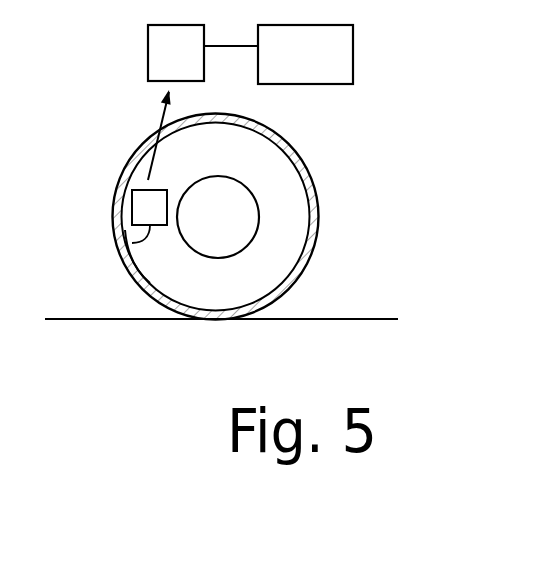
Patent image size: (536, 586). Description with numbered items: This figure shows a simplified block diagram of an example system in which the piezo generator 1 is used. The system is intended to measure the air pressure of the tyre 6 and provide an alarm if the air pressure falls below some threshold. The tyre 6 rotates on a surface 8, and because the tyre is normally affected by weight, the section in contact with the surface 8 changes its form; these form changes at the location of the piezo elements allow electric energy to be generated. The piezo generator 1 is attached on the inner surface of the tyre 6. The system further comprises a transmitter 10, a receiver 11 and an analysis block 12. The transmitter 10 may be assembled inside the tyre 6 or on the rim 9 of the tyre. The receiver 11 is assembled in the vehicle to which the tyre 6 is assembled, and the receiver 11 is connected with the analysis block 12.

The piezo generator 1 is at (138, 267).
The tyre 6 is at (313, 197).
The surface 8 is at (325, 319).
The rim 9 is at (208, 258).
The transmitter 10 is at (132, 207).
The receiver 11 is at (147, 53).
The analysis block 12 is at (353, 53).